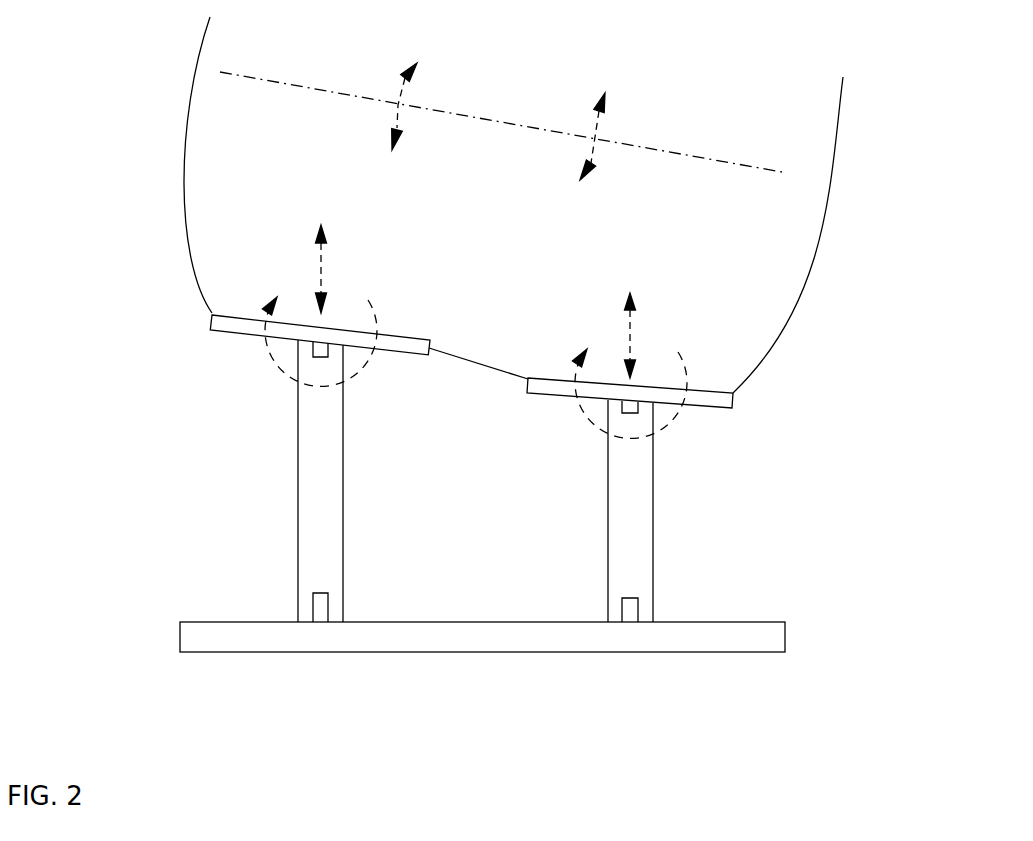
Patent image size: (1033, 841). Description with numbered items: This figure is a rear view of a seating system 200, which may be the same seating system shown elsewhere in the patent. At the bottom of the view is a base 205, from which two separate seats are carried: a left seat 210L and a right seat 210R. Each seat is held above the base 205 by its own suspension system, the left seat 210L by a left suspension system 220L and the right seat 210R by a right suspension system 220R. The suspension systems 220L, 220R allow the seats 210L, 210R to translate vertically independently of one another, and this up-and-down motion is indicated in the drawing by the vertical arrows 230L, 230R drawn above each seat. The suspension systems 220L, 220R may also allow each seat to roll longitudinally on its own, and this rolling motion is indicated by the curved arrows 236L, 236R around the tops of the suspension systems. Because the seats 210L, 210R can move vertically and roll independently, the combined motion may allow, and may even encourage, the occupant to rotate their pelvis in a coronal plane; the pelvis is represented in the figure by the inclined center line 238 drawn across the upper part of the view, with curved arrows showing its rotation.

The seating system 200 is at (88, 44).
The base 205 is at (223, 622).
The left seat 210L is at (245, 337).
The right seat 210R is at (702, 408).
The left suspension system 220L is at (298, 520).
The right suspension system 220R is at (653, 518).
The left vertical translation arrow 230L is at (321, 268).
The right vertical translation arrow 230R is at (628, 352).
The left longitudinal roll arrow 236L is at (265, 305).
The right longitudinal roll arrow 236R is at (683, 357).
The center line 238 is at (482, 117).